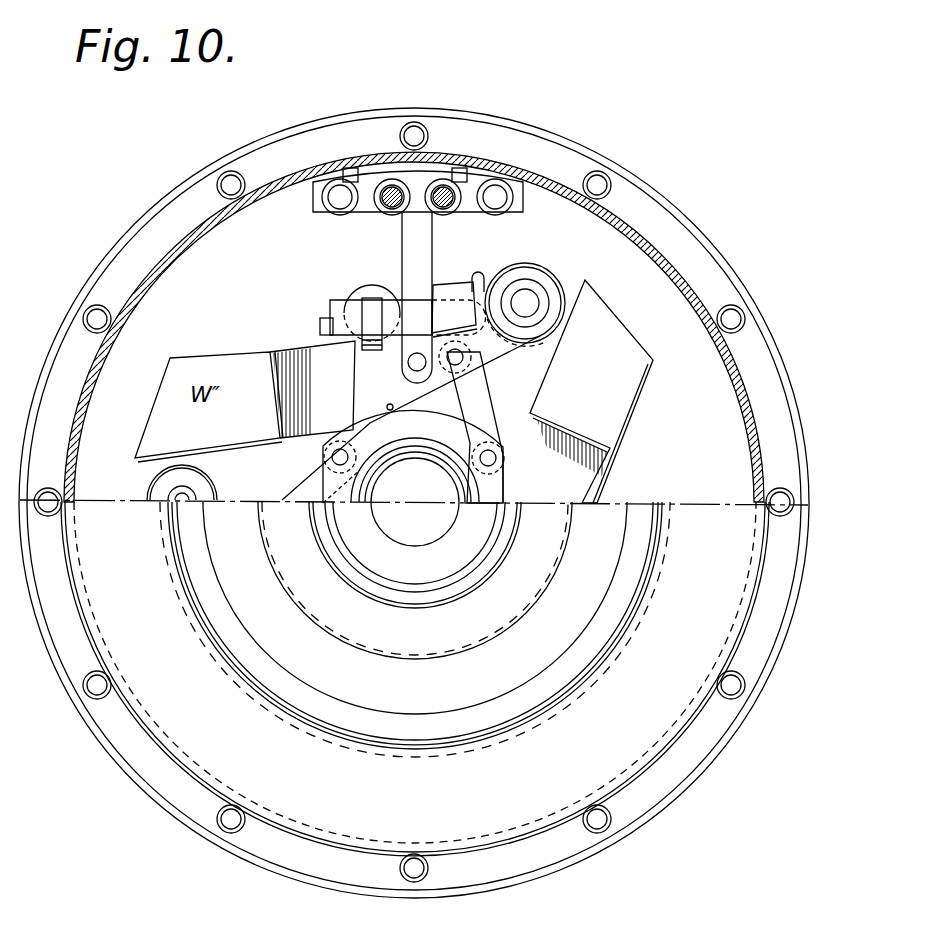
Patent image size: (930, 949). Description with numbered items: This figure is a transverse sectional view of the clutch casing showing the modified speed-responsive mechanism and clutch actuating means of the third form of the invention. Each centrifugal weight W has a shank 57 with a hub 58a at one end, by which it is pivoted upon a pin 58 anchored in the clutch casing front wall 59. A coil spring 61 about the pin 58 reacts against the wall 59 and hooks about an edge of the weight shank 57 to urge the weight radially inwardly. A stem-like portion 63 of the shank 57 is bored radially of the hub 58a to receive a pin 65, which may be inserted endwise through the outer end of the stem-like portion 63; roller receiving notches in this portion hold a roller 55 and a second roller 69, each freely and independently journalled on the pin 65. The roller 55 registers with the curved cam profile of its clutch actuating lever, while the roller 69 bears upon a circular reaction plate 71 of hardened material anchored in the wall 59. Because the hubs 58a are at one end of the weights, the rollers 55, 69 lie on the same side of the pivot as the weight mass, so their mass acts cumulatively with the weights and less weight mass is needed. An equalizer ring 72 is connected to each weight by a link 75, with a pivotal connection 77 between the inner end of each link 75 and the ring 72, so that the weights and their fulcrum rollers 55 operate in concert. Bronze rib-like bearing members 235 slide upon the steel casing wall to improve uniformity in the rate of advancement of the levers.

The bronze rib-like bearing members 235 is at (348, 178).
The circular reaction plate 71 is at (368, 302).
The roller 55 is at (413, 292).
The second roller 69 is at (363, 303).
The pin 65 is at (320, 326).
The stem-like portion 63 is at (447, 296).
The hub 58a is at (518, 282).
The coil spring 61 is at (548, 285).
The pin 58 is at (530, 308).
The wall of the clutch casing 59 is at (600, 298).
The shank 57 is at (510, 347).
The equalizer ring 72 is at (391, 410).
The links 75 is at (480, 422).
The pivotal connection 77 is at (336, 461).